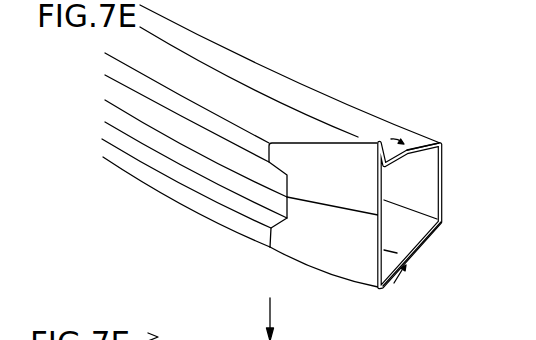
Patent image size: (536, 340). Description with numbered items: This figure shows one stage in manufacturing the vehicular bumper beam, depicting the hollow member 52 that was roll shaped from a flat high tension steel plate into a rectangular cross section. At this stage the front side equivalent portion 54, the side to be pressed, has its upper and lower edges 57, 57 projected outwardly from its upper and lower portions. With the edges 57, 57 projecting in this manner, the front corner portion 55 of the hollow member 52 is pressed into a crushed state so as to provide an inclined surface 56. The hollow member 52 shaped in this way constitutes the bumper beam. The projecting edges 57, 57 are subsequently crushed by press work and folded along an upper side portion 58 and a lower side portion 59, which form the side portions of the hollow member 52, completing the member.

The hollow member 52 is at (282, 72).
The front side equivalent portion 54 is at (189, 157).
The front corner portion 55 is at (328, 270).
The inclined surface 56 is at (369, 251).
The edges 57 is at (377, 143).
The upper side portion 58 is at (420, 146).
The lower side portion 59 is at (420, 245).